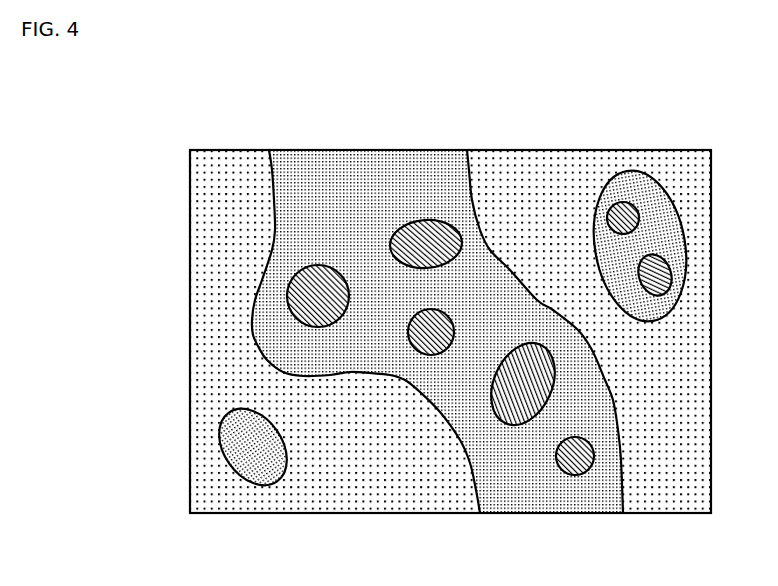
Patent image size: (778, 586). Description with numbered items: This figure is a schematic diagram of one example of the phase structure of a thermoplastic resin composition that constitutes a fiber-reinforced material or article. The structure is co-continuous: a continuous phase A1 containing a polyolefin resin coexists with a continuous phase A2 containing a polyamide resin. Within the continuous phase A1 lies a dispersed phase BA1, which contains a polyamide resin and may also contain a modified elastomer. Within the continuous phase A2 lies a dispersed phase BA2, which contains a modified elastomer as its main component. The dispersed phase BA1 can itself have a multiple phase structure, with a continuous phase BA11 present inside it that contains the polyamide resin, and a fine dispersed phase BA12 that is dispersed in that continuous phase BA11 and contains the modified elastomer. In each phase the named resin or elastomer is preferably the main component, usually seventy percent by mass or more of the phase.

The continuous phase A1 is at (233, 158).
The continuous phase A2 is at (323, 158).
The dispersed phase BA1 is at (742, 113).
The dispersed phase BA2 is at (585, 528).
The continuous phase BA11 is at (632, 183).
The fine dispersed phase BA12 is at (660, 257).